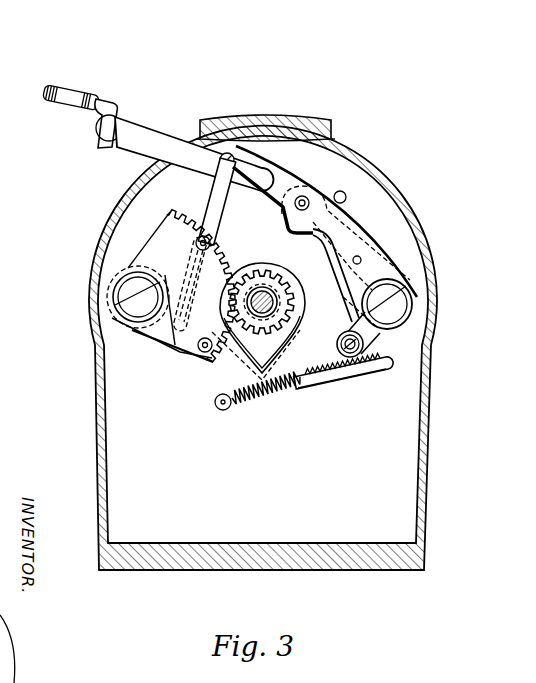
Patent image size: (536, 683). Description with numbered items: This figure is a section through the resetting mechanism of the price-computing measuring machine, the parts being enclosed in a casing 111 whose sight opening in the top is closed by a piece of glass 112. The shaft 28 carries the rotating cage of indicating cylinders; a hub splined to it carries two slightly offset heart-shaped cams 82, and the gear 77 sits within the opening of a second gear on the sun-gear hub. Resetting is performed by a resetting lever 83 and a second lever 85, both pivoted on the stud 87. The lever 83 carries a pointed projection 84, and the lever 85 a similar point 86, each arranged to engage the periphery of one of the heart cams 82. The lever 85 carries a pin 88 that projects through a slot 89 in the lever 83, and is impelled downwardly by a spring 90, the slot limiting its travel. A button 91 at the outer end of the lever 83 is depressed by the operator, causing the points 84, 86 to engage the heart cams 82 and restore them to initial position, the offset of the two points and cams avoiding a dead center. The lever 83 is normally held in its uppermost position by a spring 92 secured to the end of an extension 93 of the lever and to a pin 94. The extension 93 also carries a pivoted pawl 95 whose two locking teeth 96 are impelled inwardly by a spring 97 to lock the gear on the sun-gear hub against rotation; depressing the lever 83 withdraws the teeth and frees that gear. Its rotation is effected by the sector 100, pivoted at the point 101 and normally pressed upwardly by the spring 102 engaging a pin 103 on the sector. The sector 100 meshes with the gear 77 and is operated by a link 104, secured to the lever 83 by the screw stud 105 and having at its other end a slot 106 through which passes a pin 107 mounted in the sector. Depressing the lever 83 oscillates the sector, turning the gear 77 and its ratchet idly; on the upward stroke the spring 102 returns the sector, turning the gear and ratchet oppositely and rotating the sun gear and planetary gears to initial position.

The shaft 28 is at (285, 299).
The gear 77 is at (249, 322).
The heart-shaped cams 82 is at (203, 352).
The resetting lever 83 is at (146, 125).
The pointed projection 84 is at (283, 231).
The second lever 85 is at (311, 200).
The point 86 is at (289, 238).
The stud 87 is at (408, 295).
The pin 88 is at (309, 205).
The slot 89 is at (346, 195).
The spring 90 is at (328, 231).
The button 91 is at (47, 84).
The spring 92 is at (282, 392).
The extension 93 is at (371, 341).
The pin 94 is at (227, 412).
The pawl 95 is at (361, 384).
The locking teeth 96 is at (300, 364).
The spring 97 is at (368, 347).
The sector 100 is at (165, 217).
The pivot point 101 is at (114, 293).
The spring 102 is at (174, 347).
The pin 103 is at (193, 352).
The link 104 is at (207, 188).
The screw stud 105 is at (269, 118).
The slot 106 is at (192, 259).
The pin 107 is at (203, 224).
The casing 111 is at (442, 232).
The glass 112 is at (234, 154).